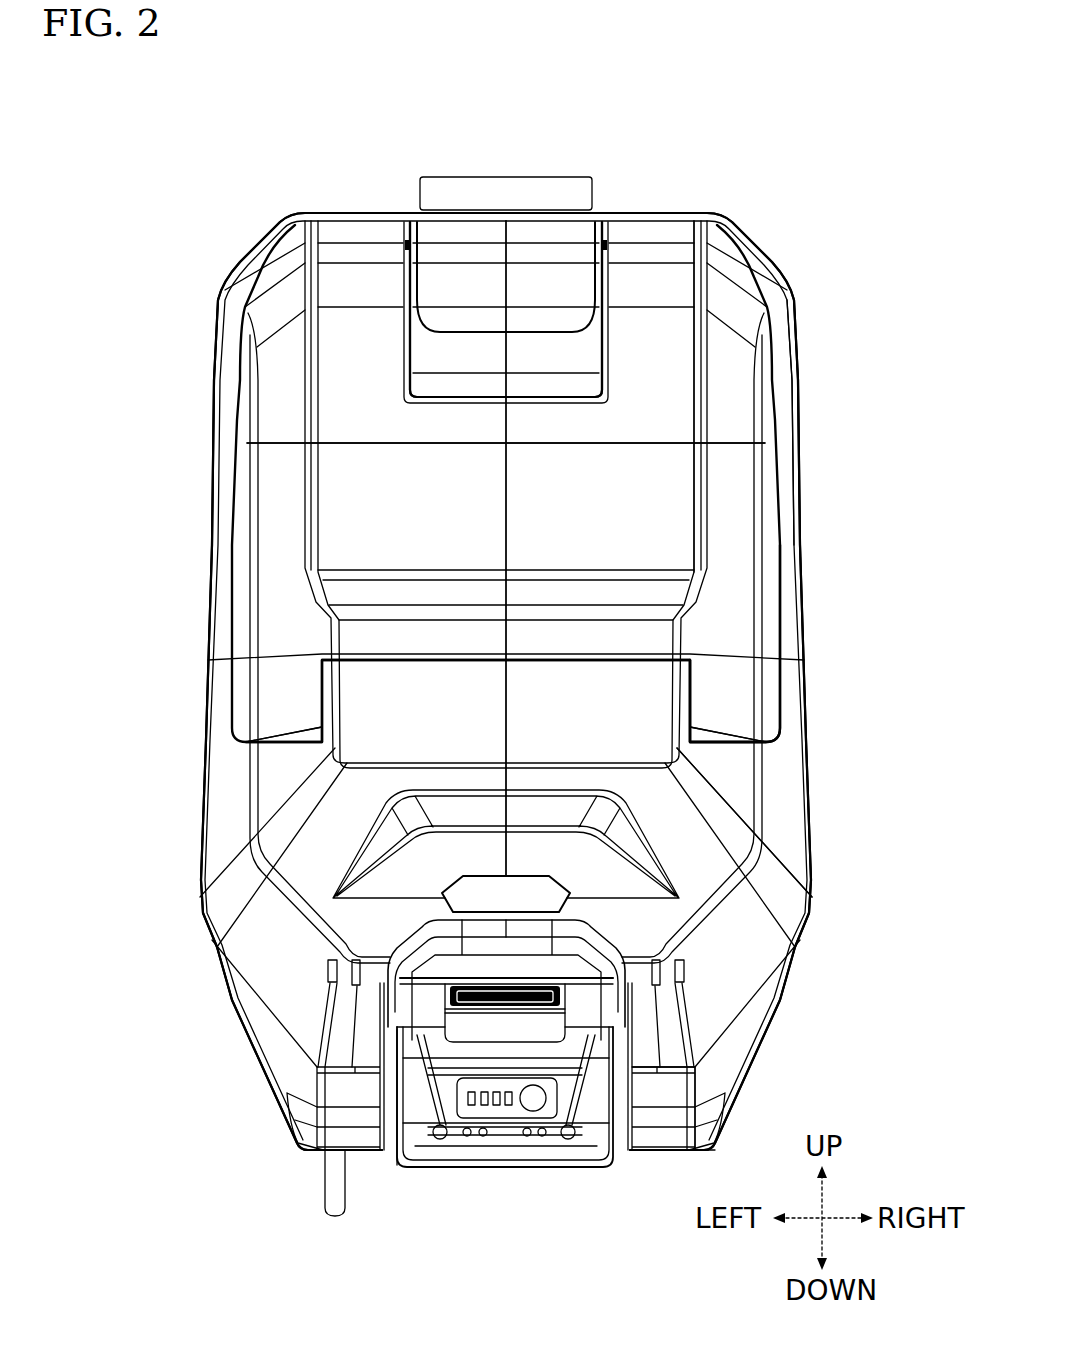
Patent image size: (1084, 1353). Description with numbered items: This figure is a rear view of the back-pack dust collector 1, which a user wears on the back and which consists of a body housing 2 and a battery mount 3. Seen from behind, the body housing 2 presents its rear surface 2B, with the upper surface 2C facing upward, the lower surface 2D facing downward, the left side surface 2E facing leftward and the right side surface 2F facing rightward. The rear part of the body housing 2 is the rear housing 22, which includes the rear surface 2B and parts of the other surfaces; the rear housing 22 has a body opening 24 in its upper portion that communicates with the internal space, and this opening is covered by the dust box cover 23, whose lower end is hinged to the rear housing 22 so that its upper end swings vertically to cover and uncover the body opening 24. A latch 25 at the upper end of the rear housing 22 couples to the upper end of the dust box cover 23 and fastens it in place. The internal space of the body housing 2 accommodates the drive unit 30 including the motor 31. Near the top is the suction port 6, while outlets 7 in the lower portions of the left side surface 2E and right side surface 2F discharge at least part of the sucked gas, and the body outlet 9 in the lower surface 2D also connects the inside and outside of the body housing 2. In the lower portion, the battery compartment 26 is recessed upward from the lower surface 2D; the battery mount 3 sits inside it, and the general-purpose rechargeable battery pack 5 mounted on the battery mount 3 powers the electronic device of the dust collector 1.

The dust collector 1 is at (803, 193).
The body housing 2 is at (665, 209).
The rear surface 2B is at (727, 777).
The upper surface 2C is at (372, 211).
The lower surface 2D is at (632, 1153).
The left side surface 2E is at (212, 544).
The right side surface 2F is at (800, 543).
The battery mount 3 is at (596, 981).
The battery pack 5 is at (501, 1168).
The suction port 6 is at (518, 177).
The outlets 7 is at (231, 1008).
The body outlet 9 is at (662, 1153).
The rear housing 22 is at (785, 399).
The dust box cover 23 is at (673, 378).
The body opening 24 is at (780, 608).
The latch 25 is at (567, 277).
The battery compartment 26 is at (389, 1148).
The drive unit 30 is at (430, 740).
The motor 31 is at (441, 770).